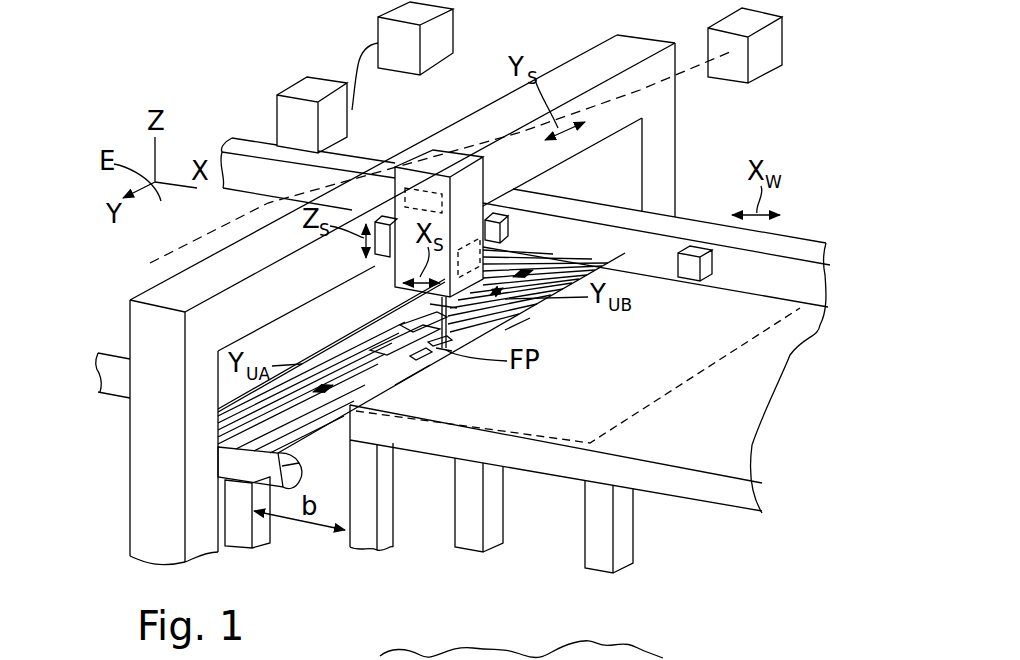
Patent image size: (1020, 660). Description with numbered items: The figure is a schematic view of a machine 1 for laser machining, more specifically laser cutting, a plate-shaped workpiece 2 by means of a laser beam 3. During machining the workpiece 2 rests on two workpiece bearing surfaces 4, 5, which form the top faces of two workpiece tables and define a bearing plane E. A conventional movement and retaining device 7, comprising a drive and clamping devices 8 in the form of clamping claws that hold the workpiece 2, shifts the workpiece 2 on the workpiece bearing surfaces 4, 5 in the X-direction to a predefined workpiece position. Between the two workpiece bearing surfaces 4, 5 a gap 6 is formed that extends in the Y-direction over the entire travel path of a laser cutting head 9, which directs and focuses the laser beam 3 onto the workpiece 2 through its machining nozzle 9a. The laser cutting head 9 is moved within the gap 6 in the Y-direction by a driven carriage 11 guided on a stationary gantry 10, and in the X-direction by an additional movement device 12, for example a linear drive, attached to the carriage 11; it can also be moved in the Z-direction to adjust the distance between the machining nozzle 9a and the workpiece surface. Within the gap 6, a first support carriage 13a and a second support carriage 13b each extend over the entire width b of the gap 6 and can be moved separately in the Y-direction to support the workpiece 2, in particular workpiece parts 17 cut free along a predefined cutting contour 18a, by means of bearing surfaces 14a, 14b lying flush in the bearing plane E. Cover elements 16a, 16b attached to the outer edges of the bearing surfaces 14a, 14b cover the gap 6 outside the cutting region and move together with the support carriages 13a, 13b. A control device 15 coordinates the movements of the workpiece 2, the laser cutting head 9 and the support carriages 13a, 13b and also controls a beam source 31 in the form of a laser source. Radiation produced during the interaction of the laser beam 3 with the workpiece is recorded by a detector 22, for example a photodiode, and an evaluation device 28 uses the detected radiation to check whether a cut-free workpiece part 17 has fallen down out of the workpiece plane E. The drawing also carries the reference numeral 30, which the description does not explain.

The machine 1 is at (778, 128).
The workpiece 2 is at (539, 442).
The laser beam 3 is at (405, 303).
The workpiece bearing surface 4 is at (113, 365).
The workpiece bearing surface 5 is at (720, 468).
The gap 6 is at (334, 482).
The movement and retaining device 7 is at (803, 285).
The clamping devices 8 is at (706, 252).
The laser cutting head 9 is at (433, 178).
The machining nozzle 9a is at (490, 313).
The stationary gantry 10 is at (153, 537).
The carriage 11 is at (388, 215).
The additional movement device 12 is at (408, 186).
The first support carriage 13a is at (412, 362).
The second support carriage 13b is at (518, 329).
The bearing surface 14a is at (337, 353).
The bearing surface 14b is at (388, 318).
The control device 15 is at (295, 120).
The cover element 16a is at (218, 423).
The cover element 16b is at (548, 275).
The workpiece part 17 is at (440, 352).
The cutting contour 18a is at (413, 358).
The detector 22 is at (470, 258).
The evaluation device 28 is at (440, 35).
The cross beam 30 is at (340, 187).
The beam source 31 is at (772, 43).